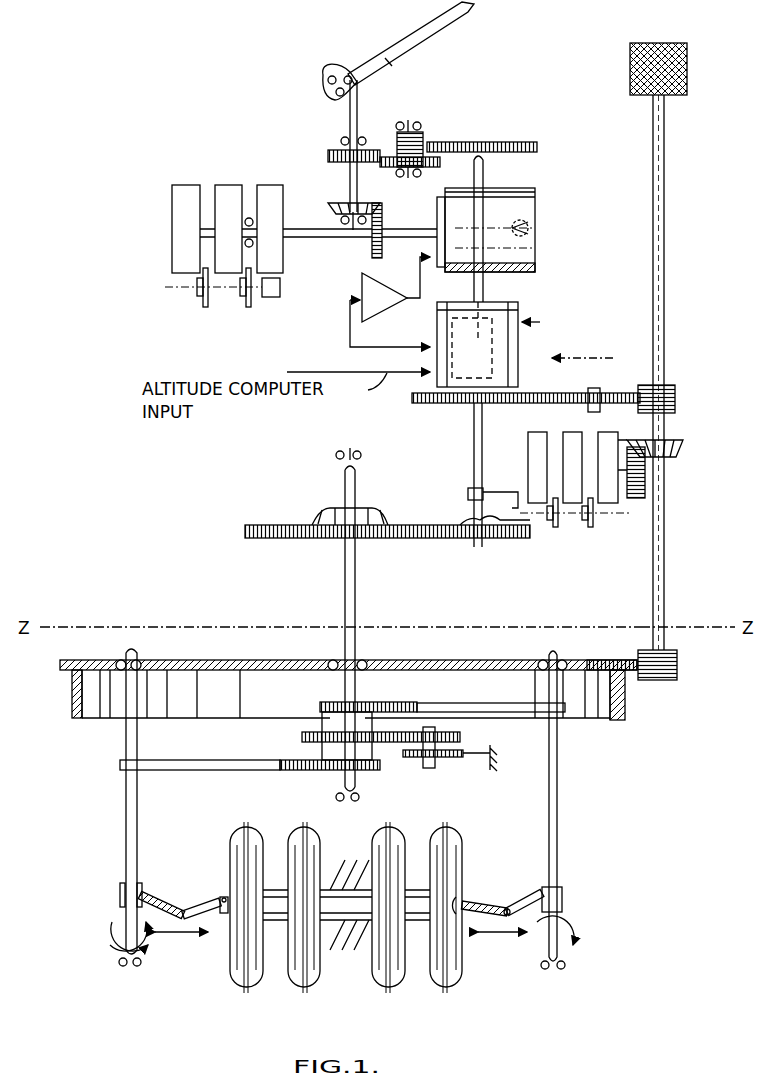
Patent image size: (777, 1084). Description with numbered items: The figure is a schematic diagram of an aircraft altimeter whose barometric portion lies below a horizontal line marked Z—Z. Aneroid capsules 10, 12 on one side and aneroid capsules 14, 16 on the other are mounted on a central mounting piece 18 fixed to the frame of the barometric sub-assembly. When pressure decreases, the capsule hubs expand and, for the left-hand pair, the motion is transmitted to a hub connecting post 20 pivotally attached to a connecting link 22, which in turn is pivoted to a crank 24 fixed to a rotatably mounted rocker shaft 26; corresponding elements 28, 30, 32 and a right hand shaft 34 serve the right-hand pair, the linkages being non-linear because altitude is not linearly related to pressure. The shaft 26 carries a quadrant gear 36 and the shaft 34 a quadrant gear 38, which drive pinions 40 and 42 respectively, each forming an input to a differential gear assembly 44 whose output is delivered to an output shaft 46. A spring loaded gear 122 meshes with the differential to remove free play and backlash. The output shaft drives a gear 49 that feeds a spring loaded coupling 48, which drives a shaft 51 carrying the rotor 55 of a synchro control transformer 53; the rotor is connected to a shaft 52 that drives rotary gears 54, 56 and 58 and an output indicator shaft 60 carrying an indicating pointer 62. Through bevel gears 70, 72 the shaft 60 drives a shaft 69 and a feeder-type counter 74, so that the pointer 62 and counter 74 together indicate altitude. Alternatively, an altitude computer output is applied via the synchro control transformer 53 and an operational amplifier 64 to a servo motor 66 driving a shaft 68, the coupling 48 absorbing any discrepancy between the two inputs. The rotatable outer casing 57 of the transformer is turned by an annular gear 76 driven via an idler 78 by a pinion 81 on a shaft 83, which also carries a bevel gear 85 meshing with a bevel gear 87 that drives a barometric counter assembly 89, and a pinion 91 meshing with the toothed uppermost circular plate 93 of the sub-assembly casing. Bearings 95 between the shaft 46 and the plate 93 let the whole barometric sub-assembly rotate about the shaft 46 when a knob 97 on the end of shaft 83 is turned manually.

The aneroid capsule 10 is at (236, 982).
The aneroid capsule 12 is at (292, 982).
The aneroid capsule 14 is at (398, 982).
The aneroid capsule 16 is at (458, 982).
The central mounting piece 18 is at (342, 920).
The hub connecting post 20 is at (221, 917).
The connecting link 22 is at (203, 897).
The crank 24 is at (150, 893).
The rocker shaft 26 is at (138, 816).
The hub connecting post 28 is at (470, 903).
The connecting link 30 is at (507, 925).
The crank 32 is at (538, 895).
The right hand shaft 34 is at (560, 843).
The quadrant gear 36 is at (207, 765).
The quadrant gear 38 is at (498, 712).
The pinion 40 is at (380, 765).
The pinion 42 is at (375, 702).
The differential gear assembly 44 is at (300, 737).
The output shaft 46 is at (355, 633).
The spring loaded coupling 48 is at (465, 505).
The gear 49 is at (410, 538).
The shaft 51 is at (474, 445).
The shaft 52 is at (472, 288).
The synchro control transformer 53 is at (540, 322).
The rotary gear 54 is at (528, 142).
The rotor 55 is at (500, 318).
The rotary gear 56 is at (423, 140).
The outer casing 57 is at (520, 355).
The rotary gear 58 is at (328, 156).
The output indicator shaft 60 is at (350, 113).
The indicating pointer 62 is at (452, 20).
The operational amplifier 64 is at (378, 312).
The servo motor 66 is at (522, 192).
The shaft 68 is at (405, 229).
The shaft 69 is at (314, 238).
The bevel gear 70 is at (372, 252).
The bevel gear 72 is at (336, 200).
The feeder-type counter 74 is at (228, 300).
The annular gear 76 is at (530, 403).
The idler 78 is at (612, 392).
The pinion 81 is at (675, 400).
The shaft 83 is at (664, 425).
The bevel gear 85 is at (683, 450).
The bevel gear 87 is at (645, 495).
The barometric counter assembly 89 is at (610, 505).
The pinion 91 is at (677, 678).
The circular plate 93 is at (590, 660).
The bearings 95 is at (340, 660).
The knob 97 is at (687, 60).
The spring loaded gear 122 is at (457, 762).